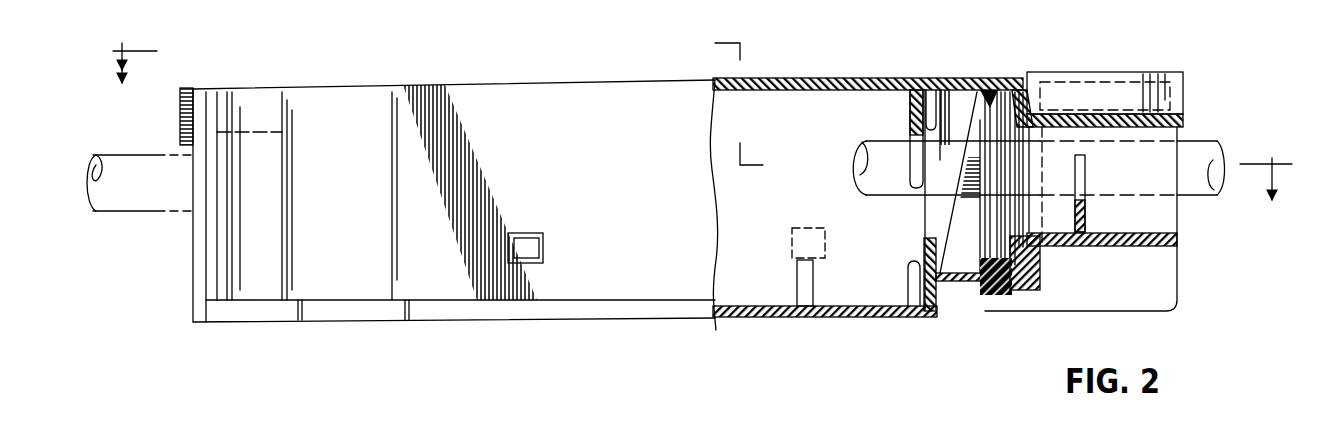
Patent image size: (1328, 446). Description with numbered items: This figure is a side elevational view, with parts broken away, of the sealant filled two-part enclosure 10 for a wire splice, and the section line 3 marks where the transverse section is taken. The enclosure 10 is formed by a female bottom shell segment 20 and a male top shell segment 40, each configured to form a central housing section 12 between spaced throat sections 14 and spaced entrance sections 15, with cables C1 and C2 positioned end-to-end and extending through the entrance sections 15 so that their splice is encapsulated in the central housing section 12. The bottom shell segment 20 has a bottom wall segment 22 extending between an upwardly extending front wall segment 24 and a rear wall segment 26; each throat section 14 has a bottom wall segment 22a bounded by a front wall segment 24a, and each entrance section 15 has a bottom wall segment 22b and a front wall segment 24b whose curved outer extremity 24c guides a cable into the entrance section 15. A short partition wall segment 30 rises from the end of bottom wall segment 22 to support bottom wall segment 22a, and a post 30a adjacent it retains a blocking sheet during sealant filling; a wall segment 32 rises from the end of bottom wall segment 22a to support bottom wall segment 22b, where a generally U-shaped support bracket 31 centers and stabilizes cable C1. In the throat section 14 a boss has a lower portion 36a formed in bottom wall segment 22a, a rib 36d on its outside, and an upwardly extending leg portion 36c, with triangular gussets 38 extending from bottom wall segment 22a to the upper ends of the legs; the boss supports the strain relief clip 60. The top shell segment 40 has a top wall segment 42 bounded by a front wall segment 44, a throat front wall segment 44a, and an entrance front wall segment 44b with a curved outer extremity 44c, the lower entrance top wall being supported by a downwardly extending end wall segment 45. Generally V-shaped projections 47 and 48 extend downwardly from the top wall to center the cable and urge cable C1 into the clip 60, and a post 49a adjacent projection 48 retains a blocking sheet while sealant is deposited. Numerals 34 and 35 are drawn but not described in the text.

The section line 3- 3 is at (697, 106).
The enclosure 10 is at (495, 321).
The central housing section 12 is at (771, 118).
The throat section 14 is at (326, 118).
The entrance section 15 is at (254, 150).
The bottom shell segment 20 is at (665, 306).
The bottom wall segment 22 is at (766, 320).
The bottom wall segment 22a is at (940, 292).
The bottom wall segment 22b is at (1095, 247).
The front wall segment 24 is at (556, 312).
The front wall segment 24a is at (386, 312).
The front wall segment 24b is at (226, 313).
The curved outer extremity 24c is at (193, 233).
The rear wall segment 26 is at (743, 110).
The partition wall segment 30 is at (924, 241).
The post 30a is at (912, 282).
The support bracket 31 is at (1086, 215).
The wall segment 32 is at (1040, 260).
The peg 34 is at (800, 293).
The mounting marker 35 is at (543, 240).
The lower portion 36a is at (1030, 286).
The leg portion 36c is at (1030, 82).
The rib 36d is at (984, 282).
The gusset 38 is at (958, 185).
The top shell segment 40 is at (508, 118).
The top wall segment 42 is at (806, 78).
The front wall segment 44 is at (565, 107).
The front wall segment 44a is at (352, 278).
The front wall segment 44b is at (276, 312).
The curved outer extremity 44c is at (212, 279).
The end wall segment 45 is at (1070, 76).
The V-shaped projection 47 is at (1023, 163).
The V-shaped projection 48 is at (911, 98).
The post 49a is at (955, 88).
The strain relief clip 60 is at (986, 243).
The cable C1 is at (1200, 183).
The cable C2 is at (108, 206).